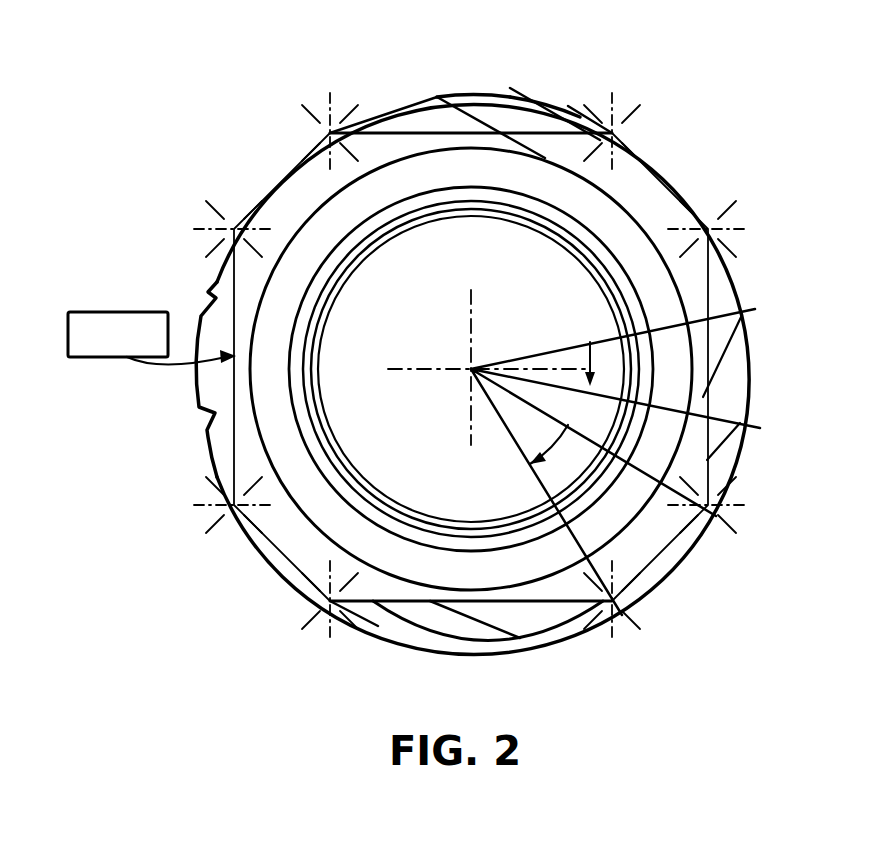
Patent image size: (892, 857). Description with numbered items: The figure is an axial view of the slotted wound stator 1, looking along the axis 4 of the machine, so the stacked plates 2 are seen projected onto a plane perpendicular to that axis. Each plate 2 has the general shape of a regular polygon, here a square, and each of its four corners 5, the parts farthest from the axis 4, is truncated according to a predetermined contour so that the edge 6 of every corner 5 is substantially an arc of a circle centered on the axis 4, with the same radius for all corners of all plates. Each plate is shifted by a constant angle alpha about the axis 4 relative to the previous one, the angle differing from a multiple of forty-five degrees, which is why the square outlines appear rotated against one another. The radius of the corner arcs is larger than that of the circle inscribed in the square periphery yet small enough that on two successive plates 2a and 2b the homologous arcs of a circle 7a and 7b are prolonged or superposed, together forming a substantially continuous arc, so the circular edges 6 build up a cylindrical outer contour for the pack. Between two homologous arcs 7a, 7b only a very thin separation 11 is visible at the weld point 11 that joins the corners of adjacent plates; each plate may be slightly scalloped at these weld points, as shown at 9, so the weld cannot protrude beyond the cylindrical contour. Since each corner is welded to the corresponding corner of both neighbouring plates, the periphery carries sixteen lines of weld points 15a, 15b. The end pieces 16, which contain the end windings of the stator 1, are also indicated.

The slotted wound stator 1 is at (437, 340).
The plates 2 is at (664, 183).
The first of two successive plates 2a is at (440, 98).
The second of two successive plates 2b is at (596, 112).
The axis 4 is at (467, 374).
The corners 5 is at (305, 150).
The edge 6 is at (281, 170).
The homologous arc of a circle 7a is at (467, 93).
The homologous arc of a circle 7b is at (548, 95).
The scallop 9 is at (198, 315).
The weld point 11 is at (523, 98).
The lines of weld points 15a is at (614, 130).
The lines of weld points 15b is at (333, 130).
The end pieces 16 is at (584, 213).